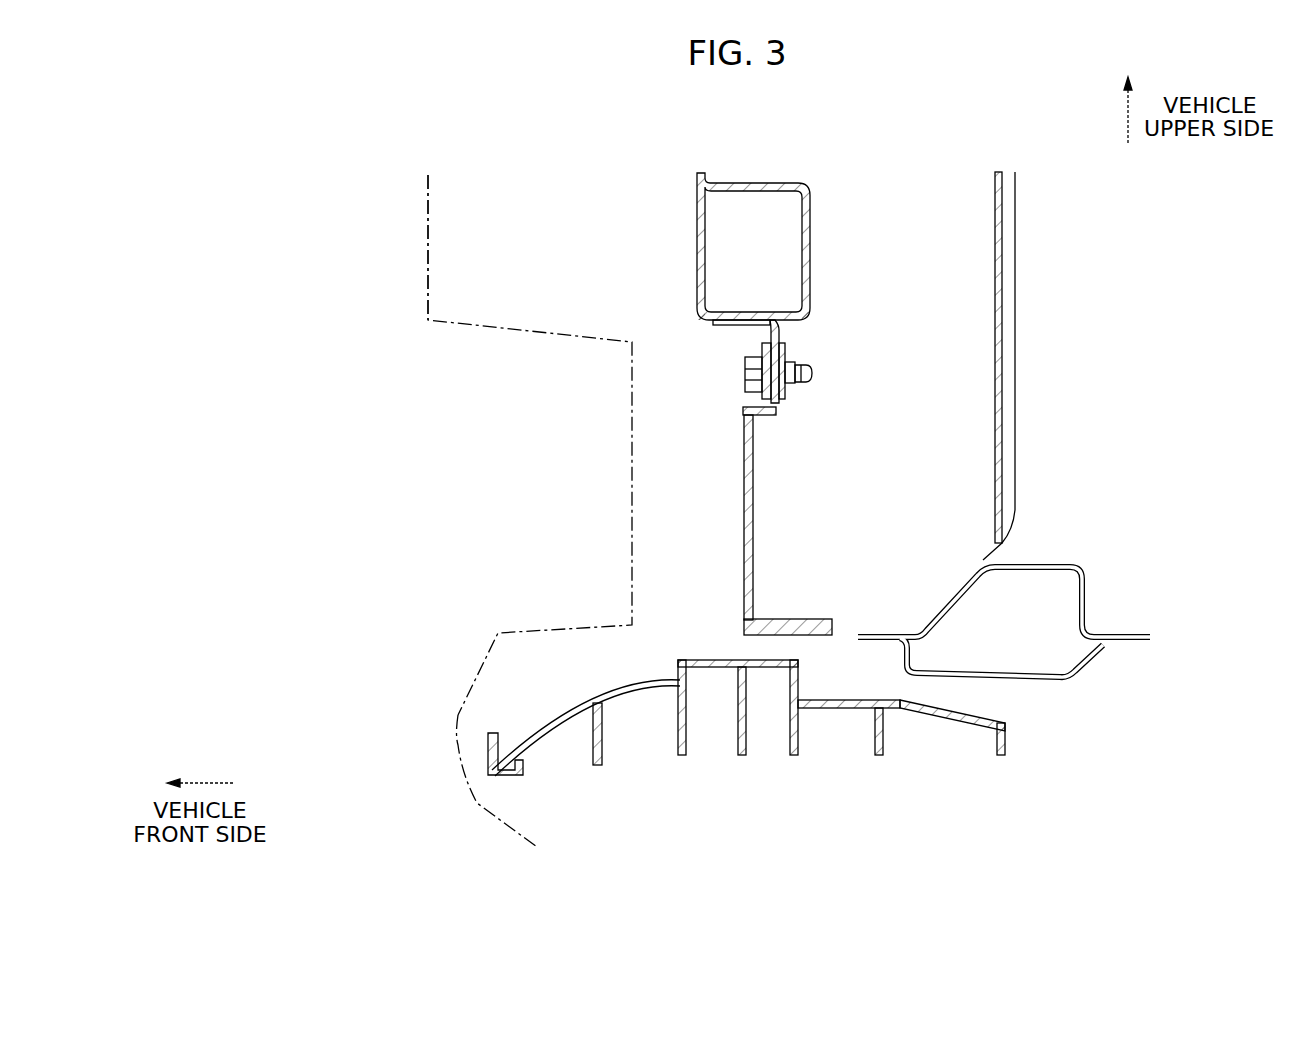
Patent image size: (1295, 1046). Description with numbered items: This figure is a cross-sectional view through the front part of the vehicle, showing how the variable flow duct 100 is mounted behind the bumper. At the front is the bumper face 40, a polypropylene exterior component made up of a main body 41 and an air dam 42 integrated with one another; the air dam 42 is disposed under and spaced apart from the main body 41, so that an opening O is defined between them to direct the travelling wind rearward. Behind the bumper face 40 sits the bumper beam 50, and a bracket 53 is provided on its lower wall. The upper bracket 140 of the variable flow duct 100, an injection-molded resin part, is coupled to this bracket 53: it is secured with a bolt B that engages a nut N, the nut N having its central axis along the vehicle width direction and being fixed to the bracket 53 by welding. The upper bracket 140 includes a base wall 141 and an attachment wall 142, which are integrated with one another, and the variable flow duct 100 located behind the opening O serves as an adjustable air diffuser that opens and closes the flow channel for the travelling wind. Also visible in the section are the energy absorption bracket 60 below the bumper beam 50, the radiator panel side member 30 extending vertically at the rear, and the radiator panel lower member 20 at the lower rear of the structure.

The radiator panel lower member 20 is at (1080, 670).
The radiator panel side member 30 is at (1017, 245).
The bumper face 40 is at (428, 480).
The main body 41 is at (428, 237).
The air dam 42 is at (458, 757).
The bumper beam 50 is at (697, 193).
The bracket 53 is at (770, 323).
The energy absorption (EA) bracket 60 is at (662, 683).
The variable flow duct 100 is at (705, 485).
The upper bracket 140 is at (943, 495).
The base wall 141 is at (753, 505).
The attachment wall 142 is at (787, 400).
The bolt B is at (805, 368).
The nut N is at (797, 350).
The opening O is at (578, 551).